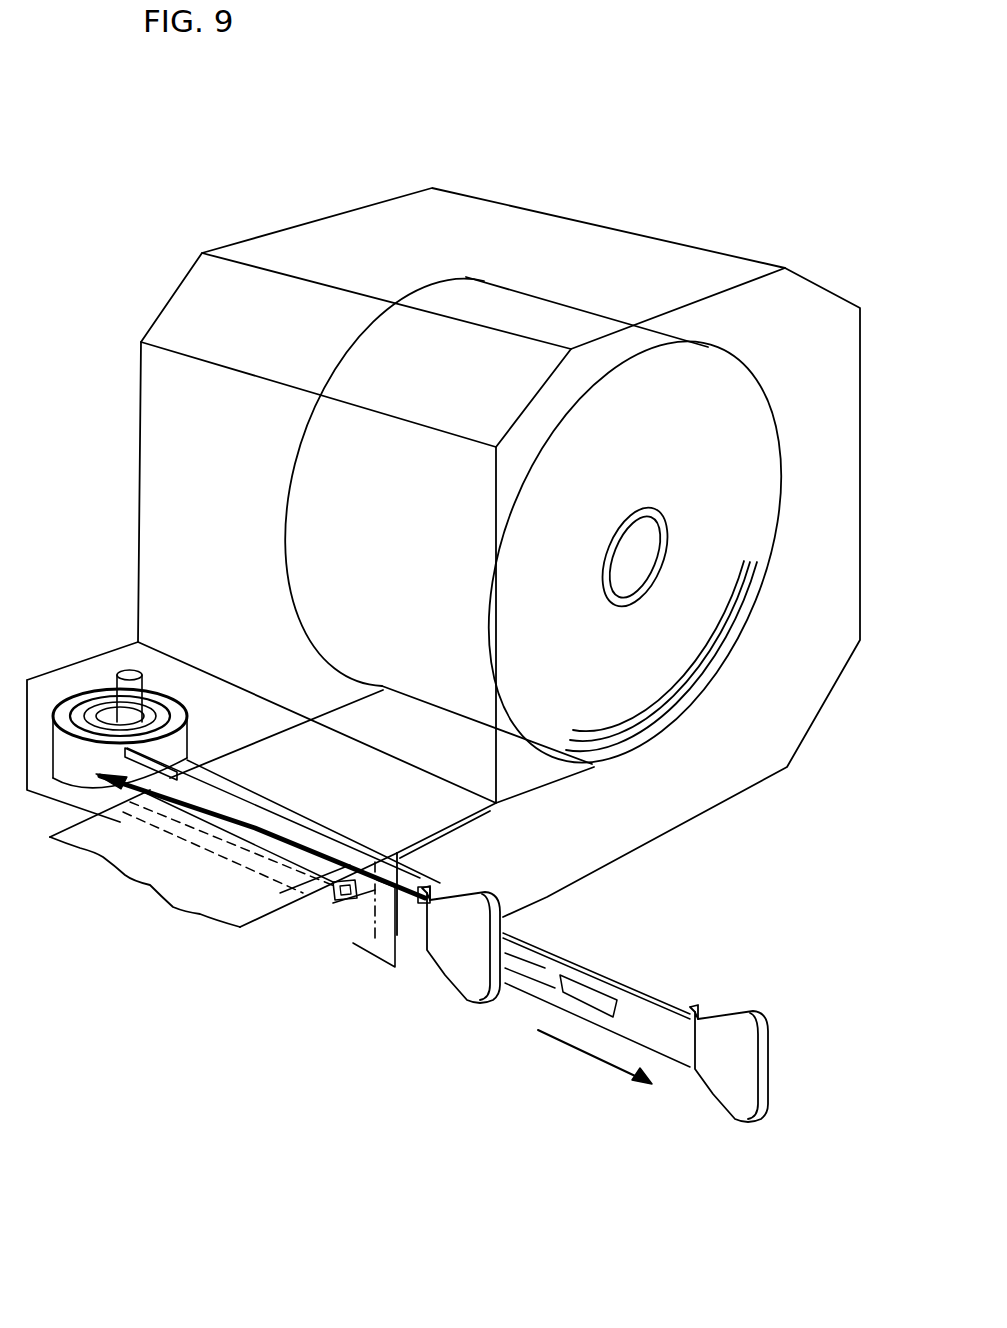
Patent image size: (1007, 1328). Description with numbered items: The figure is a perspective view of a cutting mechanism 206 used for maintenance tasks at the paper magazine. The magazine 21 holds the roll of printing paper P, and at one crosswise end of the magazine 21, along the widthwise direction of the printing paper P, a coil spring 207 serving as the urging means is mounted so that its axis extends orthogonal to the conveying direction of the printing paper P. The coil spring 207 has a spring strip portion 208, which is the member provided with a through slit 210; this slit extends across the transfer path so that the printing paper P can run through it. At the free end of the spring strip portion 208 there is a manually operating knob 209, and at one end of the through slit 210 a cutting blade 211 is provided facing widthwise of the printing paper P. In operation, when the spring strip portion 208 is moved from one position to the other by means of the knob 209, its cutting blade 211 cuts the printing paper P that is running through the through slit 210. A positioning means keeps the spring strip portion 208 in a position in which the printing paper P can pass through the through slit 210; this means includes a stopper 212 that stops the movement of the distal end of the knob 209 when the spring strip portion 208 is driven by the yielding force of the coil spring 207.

The first magazine 21 is at (737, 835).
The printing paper P is at (533, 777).
The cutting mechanism 206 is at (286, 933).
The coil spring 207 is at (97, 690).
The spring strip portion 208 is at (363, 912).
The manually operating knob 209 is at (463, 980).
The through slit 210 is at (343, 892).
The cutting blade 211 is at (101, 796).
The stopper 212 is at (423, 883).